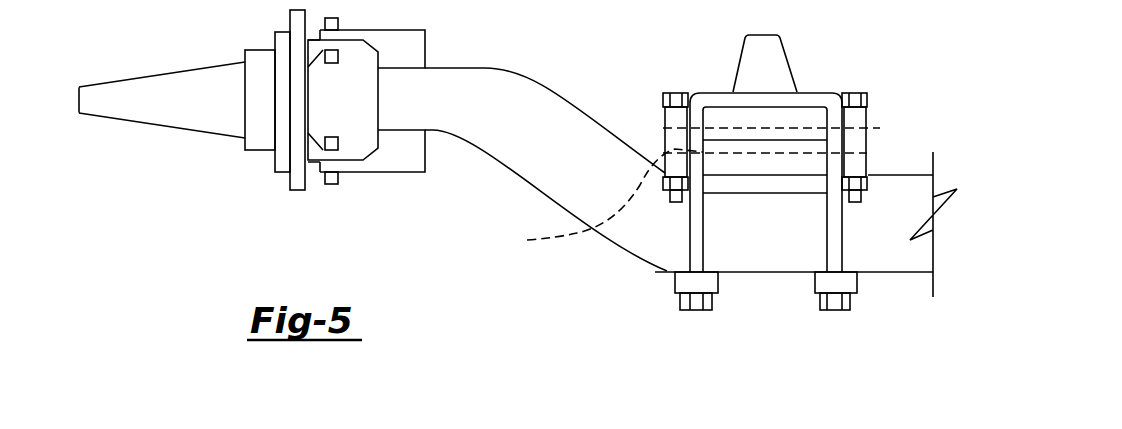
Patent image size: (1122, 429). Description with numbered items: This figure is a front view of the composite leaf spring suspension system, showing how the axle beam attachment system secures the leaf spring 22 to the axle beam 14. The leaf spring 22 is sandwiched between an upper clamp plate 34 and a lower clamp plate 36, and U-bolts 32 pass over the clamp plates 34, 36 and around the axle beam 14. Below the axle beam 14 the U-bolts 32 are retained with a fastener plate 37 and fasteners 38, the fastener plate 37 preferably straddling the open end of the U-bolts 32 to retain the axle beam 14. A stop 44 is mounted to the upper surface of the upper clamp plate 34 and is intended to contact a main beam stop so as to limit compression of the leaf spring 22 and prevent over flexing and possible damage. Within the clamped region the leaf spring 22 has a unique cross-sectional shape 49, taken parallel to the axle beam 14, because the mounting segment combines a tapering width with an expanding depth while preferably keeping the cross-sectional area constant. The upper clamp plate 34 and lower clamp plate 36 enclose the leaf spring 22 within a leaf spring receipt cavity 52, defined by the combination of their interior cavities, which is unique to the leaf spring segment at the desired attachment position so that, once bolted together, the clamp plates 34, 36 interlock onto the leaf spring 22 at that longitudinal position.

The axle beam 14 is at (895, 241).
The leaf spring 22 is at (880, 130).
The U-bolts 32 is at (686, 272).
The upper clamp plate 34 is at (808, 115).
The lower clamp plate 36 is at (787, 163).
The fastener plate 37 is at (853, 278).
The fasteners 38 is at (695, 310).
The stop 44 is at (777, 62).
The cross-sectional shape 49 is at (703, 119).
The leaf spring receipt cavity 52 is at (602, 200).